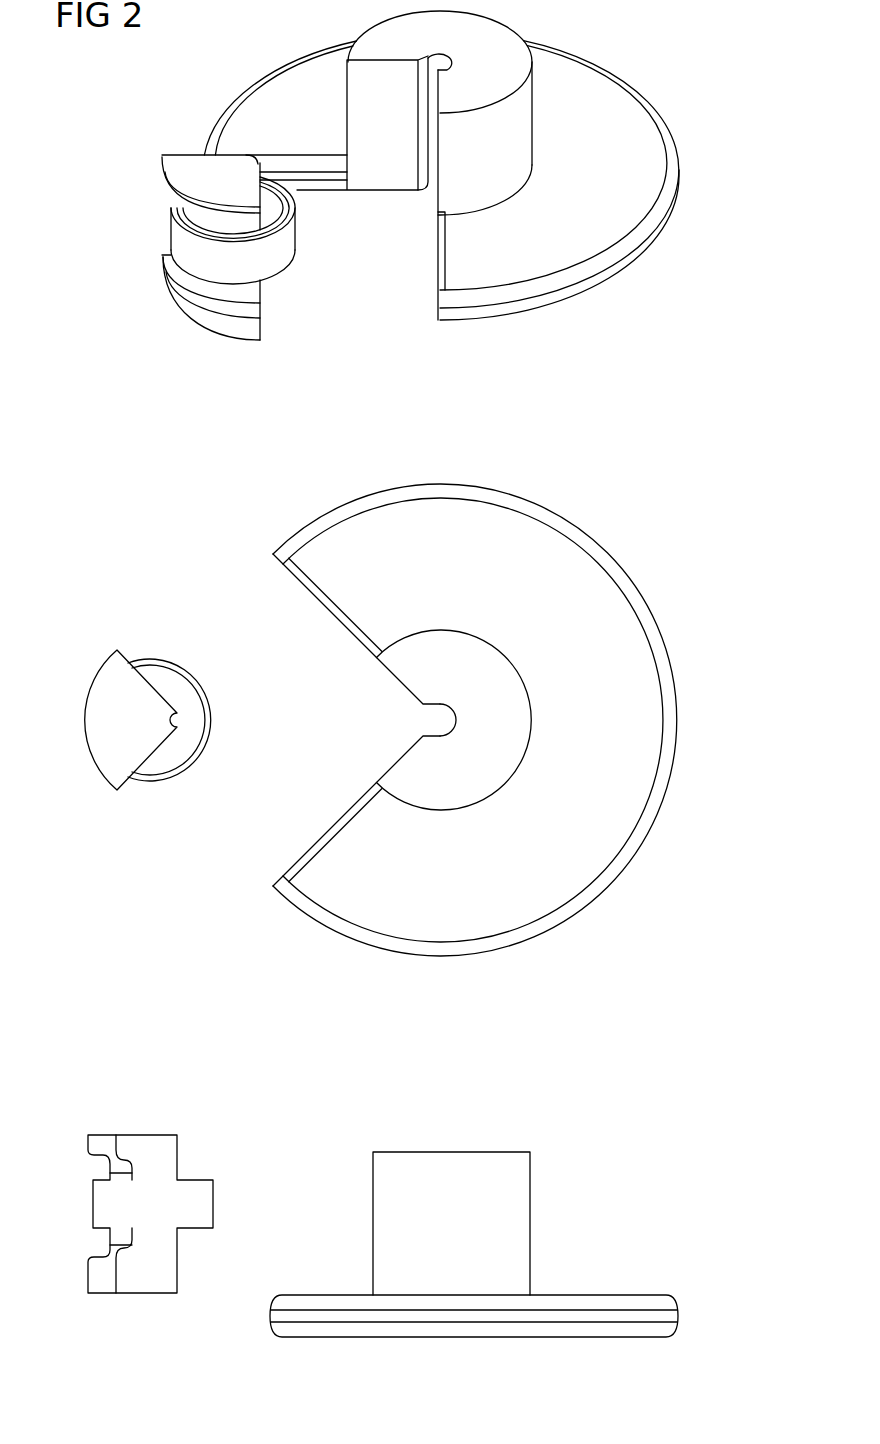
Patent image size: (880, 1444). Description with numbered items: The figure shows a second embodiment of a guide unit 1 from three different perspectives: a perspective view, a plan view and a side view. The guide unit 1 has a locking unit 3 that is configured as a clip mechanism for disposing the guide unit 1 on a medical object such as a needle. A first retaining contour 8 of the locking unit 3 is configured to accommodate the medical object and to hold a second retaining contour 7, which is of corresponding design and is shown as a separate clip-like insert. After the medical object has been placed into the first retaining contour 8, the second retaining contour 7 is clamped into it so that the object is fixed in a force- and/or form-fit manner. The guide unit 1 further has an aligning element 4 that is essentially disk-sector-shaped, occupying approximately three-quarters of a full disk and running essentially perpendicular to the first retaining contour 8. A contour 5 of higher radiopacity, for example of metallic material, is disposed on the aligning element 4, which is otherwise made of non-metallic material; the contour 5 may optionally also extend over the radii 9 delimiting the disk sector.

The guide unit 1 is at (491, 688).
The locking unit 3 is at (200, 753).
The aligning element 4 is at (588, 88).
The contour 5 is at (652, 114).
The second retaining contour 7 is at (233, 348).
The first retaining contour 8 is at (410, 93).
The radii 9 is at (438, 244).